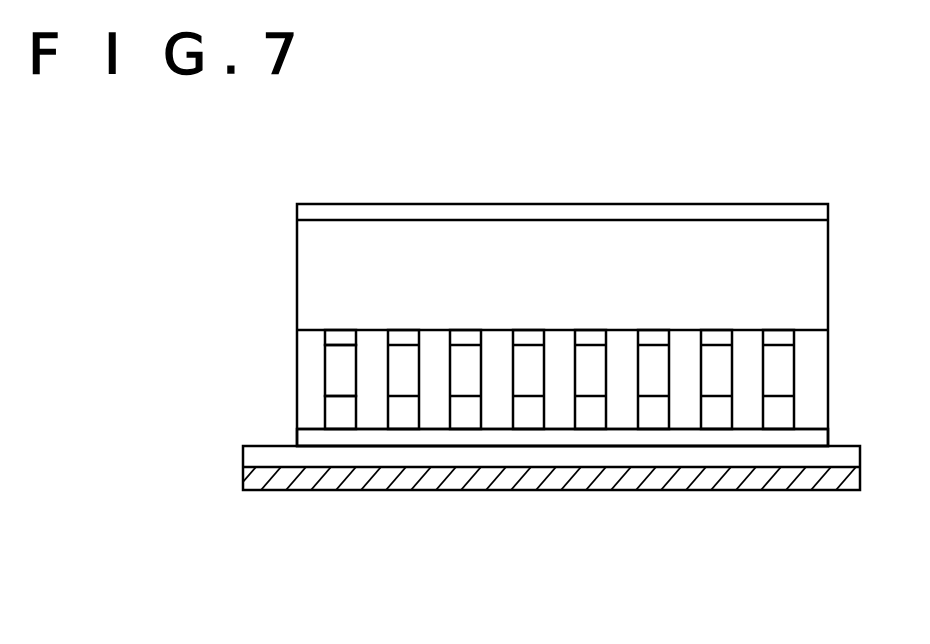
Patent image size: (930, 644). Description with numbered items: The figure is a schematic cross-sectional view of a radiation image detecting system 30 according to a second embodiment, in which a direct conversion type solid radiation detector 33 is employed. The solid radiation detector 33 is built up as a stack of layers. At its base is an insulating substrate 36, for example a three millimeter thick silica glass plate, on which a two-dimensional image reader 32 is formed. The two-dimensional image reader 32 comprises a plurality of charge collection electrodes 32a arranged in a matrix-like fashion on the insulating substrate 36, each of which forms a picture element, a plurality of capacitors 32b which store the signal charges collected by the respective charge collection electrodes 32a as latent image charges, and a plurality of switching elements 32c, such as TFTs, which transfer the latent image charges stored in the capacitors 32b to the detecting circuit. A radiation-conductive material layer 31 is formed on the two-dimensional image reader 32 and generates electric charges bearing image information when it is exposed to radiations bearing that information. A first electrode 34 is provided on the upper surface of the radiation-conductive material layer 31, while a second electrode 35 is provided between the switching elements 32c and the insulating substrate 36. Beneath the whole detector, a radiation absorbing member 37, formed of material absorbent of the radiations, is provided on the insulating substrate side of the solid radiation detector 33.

The radiation image detecting system 30 is at (146, 182).
The radiation-conductive material layer 31 is at (297, 268).
The two-dimensional image reader 32 is at (288, 328).
The charge collection electrodes 32a is at (346, 338).
The capacitors 32b is at (342, 362).
The switching elements 32c is at (347, 410).
The direct conversion type solid radiation detector 33 is at (235, 463).
The first electrode 34 is at (297, 212).
The second electrode 35 is at (297, 431).
The insulating substrate 36 is at (297, 443).
The radiation absorbing member 37 is at (243, 482).